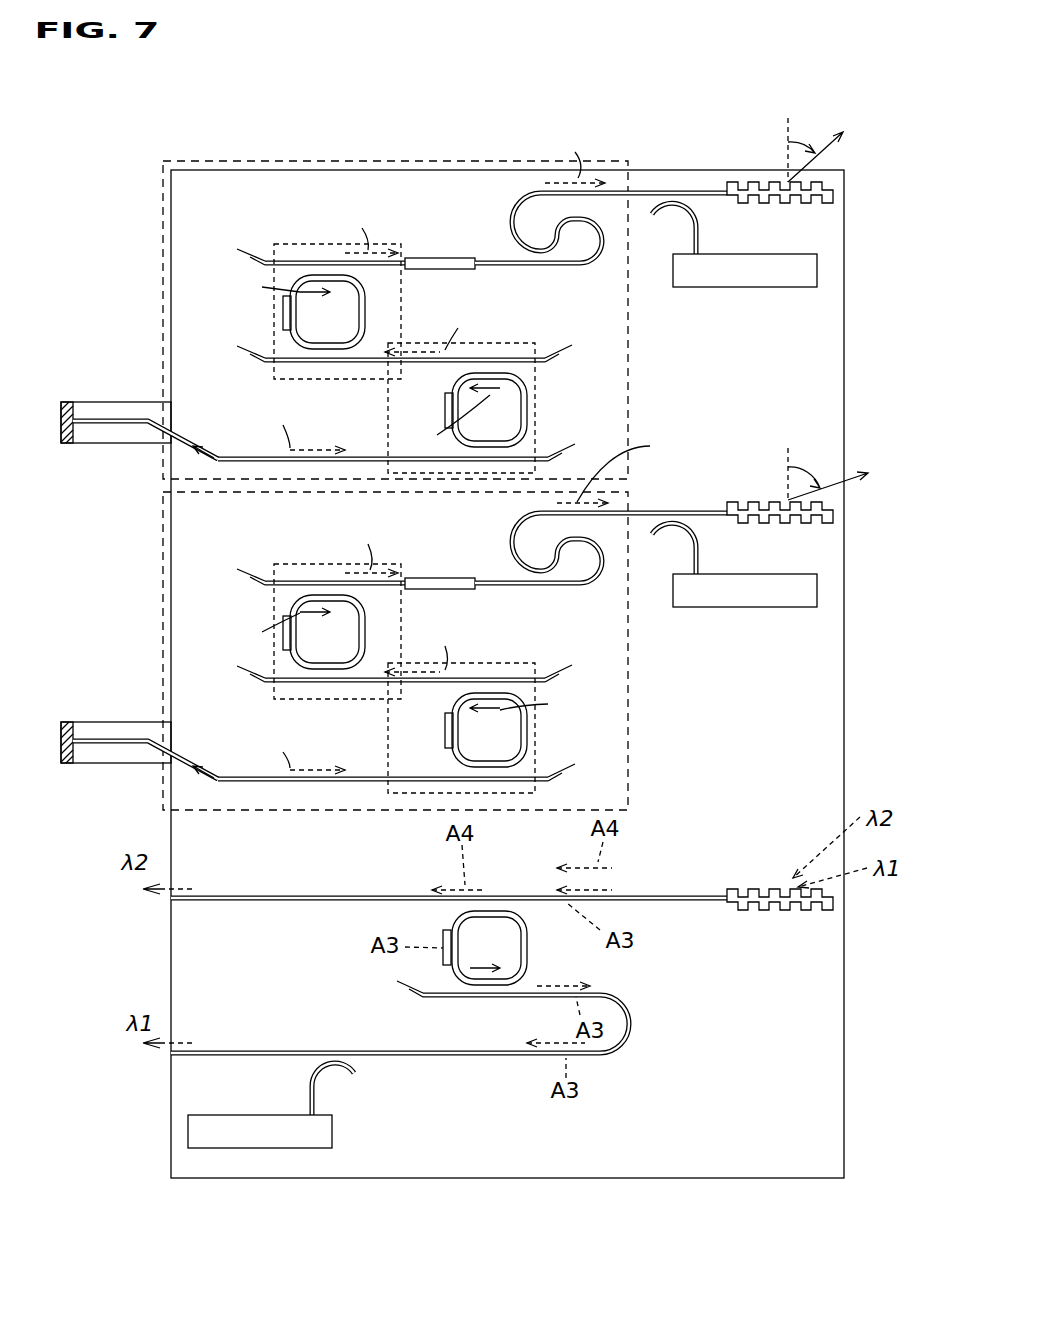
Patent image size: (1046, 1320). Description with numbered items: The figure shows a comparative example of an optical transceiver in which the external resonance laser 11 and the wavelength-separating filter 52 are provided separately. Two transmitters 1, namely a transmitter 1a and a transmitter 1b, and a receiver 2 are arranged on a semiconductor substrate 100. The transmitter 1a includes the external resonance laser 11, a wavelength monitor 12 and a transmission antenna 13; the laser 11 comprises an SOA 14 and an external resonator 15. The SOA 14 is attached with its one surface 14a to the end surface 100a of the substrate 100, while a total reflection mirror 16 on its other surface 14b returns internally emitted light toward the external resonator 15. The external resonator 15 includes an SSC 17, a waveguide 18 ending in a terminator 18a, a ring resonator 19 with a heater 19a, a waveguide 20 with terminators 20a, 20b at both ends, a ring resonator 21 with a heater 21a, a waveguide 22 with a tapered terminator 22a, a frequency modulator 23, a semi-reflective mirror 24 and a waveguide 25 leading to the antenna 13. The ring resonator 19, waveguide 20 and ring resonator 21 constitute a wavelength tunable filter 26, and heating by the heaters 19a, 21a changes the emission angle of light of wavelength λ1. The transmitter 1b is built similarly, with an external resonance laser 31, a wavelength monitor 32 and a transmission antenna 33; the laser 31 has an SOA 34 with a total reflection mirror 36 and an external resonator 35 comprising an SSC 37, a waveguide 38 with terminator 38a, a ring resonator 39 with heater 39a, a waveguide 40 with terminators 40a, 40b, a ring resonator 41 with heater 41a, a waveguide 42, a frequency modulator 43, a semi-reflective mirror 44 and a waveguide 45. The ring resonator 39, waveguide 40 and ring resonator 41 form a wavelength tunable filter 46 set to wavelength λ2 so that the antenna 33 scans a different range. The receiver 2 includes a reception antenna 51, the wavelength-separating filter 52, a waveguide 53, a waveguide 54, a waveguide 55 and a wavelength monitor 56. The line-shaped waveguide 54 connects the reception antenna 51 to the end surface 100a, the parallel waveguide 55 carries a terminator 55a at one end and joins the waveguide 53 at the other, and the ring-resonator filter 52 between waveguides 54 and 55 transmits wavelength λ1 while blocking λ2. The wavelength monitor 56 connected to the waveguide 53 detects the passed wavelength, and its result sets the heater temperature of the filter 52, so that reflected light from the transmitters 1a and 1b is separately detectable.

The transmitter 1 is at (448, 476).
The transmitter 1a is at (448, 633).
The transmitter 1b is at (450, 294).
The receiver 2 is at (862, 1020).
The external resonance laser 11 is at (153, 592).
The wavelength monitor 12 is at (742, 565).
The transmission antenna 13 is at (780, 481).
The SOA 14 is at (111, 711).
The one surface 14a is at (142, 715).
The other surface 14b is at (35, 712).
The external resonator 15 is at (155, 494).
The total reflection mirror 16 is at (44, 762).
The SSC 17 is at (148, 744).
The waveguide 18 is at (383, 754).
The terminator 18a is at (403, 803).
The ring resonator 19 is at (515, 730).
The heater 19a is at (425, 718).
The waveguide 20 is at (405, 708).
The terminator 20a is at (222, 668).
The terminator 20b is at (540, 651).
The ring resonator 21 is at (368, 632).
The heater 21a is at (246, 620).
The waveguide 22 is at (335, 554).
The terminator 22a is at (239, 555).
The frequency modulator 23 is at (440, 558).
The semi-reflective mirror 24 is at (538, 570).
The waveguide 25 is at (637, 486).
The wavelength tunable filter 26 is at (402, 645).
The external resonance laser 31 is at (153, 283).
The wavelength monitor 32 is at (752, 254).
The transmission antenna 33 is at (765, 181).
The SOA 34 is at (128, 402).
The external resonator 35 is at (150, 176).
The total reflection mirror 36 is at (63, 420).
The SSC 37 is at (187, 442).
The waveguide 38 is at (378, 457).
The terminator 38a is at (560, 445).
The ring resonator 39 is at (527, 400).
The heater 39a is at (445, 405).
The waveguide 40 is at (350, 364).
The terminator 40a is at (243, 350).
The terminator 40b is at (558, 348).
The ring resonator 41 is at (365, 310).
The heater 41a is at (283, 307).
The waveguide 42 is at (307, 260).
The frequency modulator 43 is at (440, 258).
The semi-reflective mirror 44 is at (584, 267).
The waveguide 45 is at (665, 190).
The wavelength tunable filter 46 is at (274, 240).
The reception antenna 51 is at (790, 912).
The wavelength-separating filter 52 is at (527, 948).
The waveguide 53 is at (488, 1058).
The waveguide 54 is at (305, 896).
The waveguide 55 is at (490, 998).
The terminator 55a is at (410, 985).
The wavelength monitor 56 is at (332, 1128).
The semiconductor substrate 100 is at (222, 1180).
The end surface 100a is at (171, 1170).